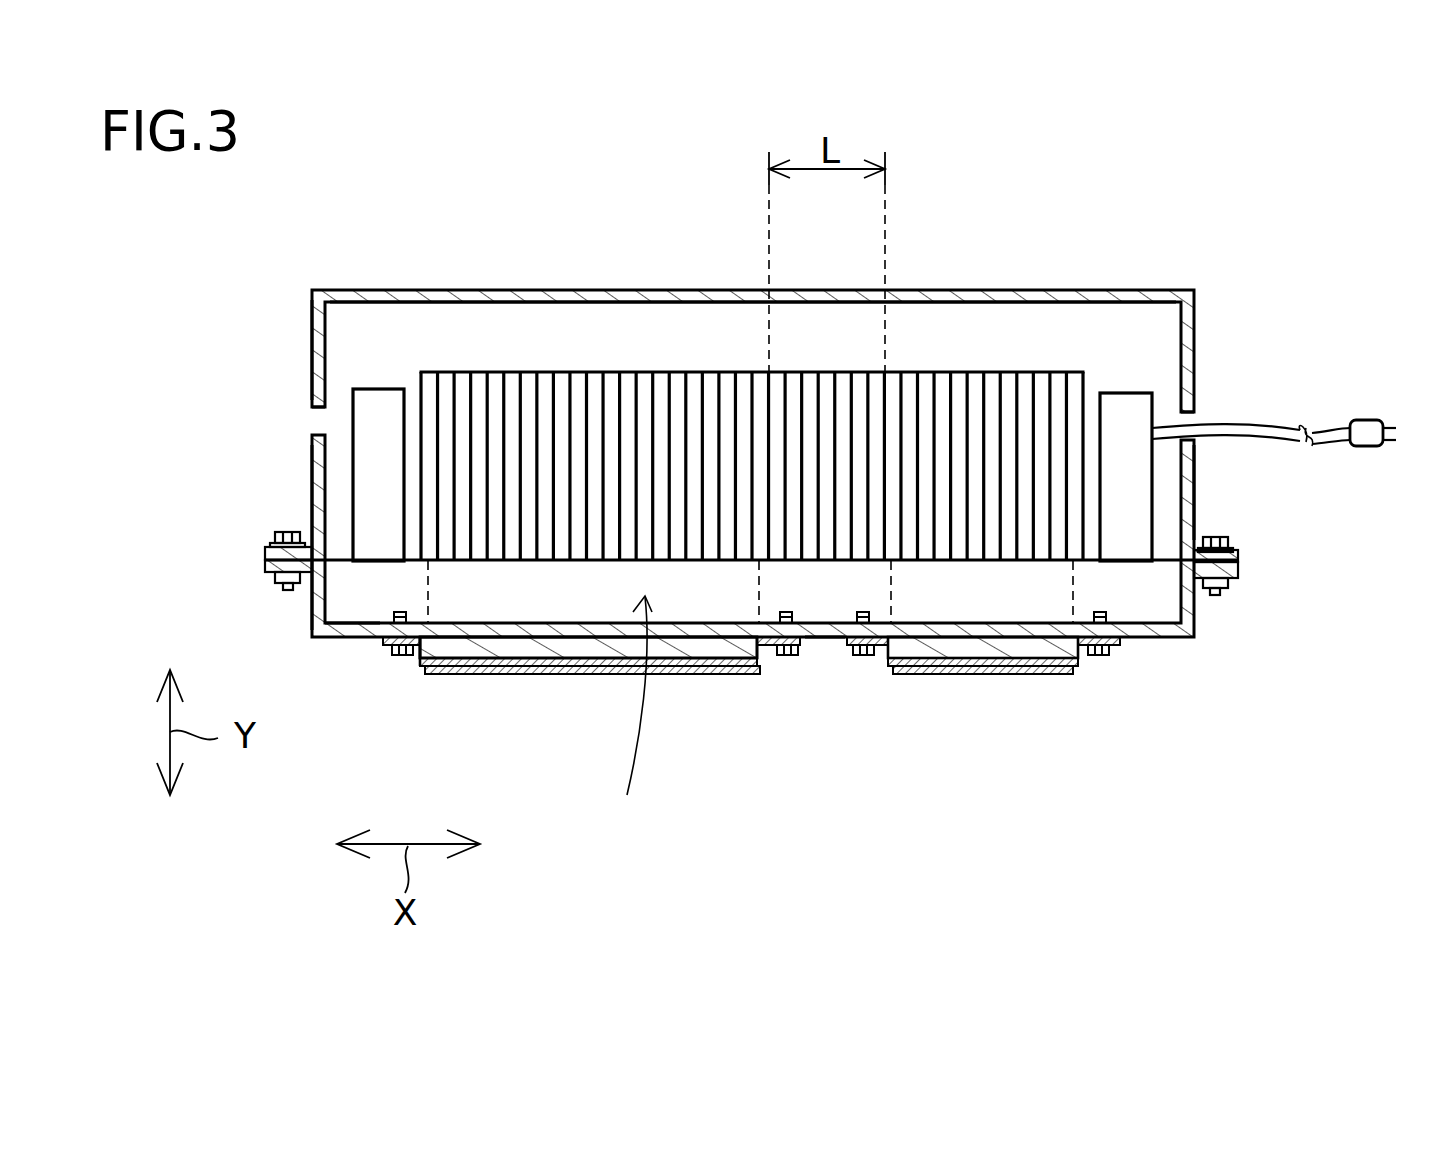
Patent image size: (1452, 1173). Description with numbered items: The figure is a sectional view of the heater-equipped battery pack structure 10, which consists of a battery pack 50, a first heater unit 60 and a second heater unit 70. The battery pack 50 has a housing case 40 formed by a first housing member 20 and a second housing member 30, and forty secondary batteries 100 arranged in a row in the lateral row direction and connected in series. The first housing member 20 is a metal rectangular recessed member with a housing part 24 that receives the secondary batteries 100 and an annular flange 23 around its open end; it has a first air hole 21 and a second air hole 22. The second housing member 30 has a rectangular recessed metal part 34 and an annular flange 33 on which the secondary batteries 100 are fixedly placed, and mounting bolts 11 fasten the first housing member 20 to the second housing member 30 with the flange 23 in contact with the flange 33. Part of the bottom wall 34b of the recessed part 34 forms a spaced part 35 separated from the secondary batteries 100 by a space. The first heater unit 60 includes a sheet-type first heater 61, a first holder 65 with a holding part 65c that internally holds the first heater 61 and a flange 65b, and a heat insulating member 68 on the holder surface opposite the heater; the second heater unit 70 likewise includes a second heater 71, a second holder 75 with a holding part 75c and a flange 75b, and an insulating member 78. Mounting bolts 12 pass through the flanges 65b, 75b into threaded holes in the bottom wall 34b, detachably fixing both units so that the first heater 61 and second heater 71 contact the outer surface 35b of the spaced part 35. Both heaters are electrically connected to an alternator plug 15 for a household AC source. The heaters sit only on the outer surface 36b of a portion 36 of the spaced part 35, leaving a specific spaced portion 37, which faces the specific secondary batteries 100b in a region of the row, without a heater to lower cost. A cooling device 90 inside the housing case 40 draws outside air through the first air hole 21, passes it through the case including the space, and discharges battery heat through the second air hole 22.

The heater-equipped battery pack structure 10 is at (1166, 206).
The mounting bolt 11 is at (288, 530).
The mounting bolt 12 is at (402, 657).
The alternator plug 15 is at (1367, 427).
The first housing member 20 is at (1193, 338).
The first air hole 21 is at (316, 406).
The second air hole 22 is at (1193, 417).
The flange 23 is at (265, 552).
The housing part 24 is at (516, 296).
The second housing member 30 is at (1183, 615).
The flange 33 is at (265, 570).
The recessed part 34 is at (312, 600).
The bottom wall 34b is at (345, 632).
The spaced part 35 is at (540, 642).
The outer surface 35b is at (485, 676).
The portion 36 is at (677, 676).
The outer surface 36b is at (720, 676).
The specific spaced portion 37 is at (827, 640).
The housing case 40 is at (312, 320).
The battery pack 50 is at (1193, 457).
The first heater unit 60 is at (720, 731).
The first heater 61 is at (460, 650).
The first holder 65 is at (590, 668).
The flange 65b is at (386, 642).
The holding part 65c is at (557, 676).
The heat insulating member 68 is at (655, 676).
The second heater unit 70 is at (1030, 732).
The second heater 71 is at (945, 652).
The second holder 75 is at (1015, 664).
The flange 75b is at (850, 647).
The holding part 75c is at (990, 676).
The insulating member 78 is at (1047, 677).
The cooling device 90 is at (368, 410).
The secondary battery 100 is at (428, 395).
The specific secondary battery 100b is at (843, 385).